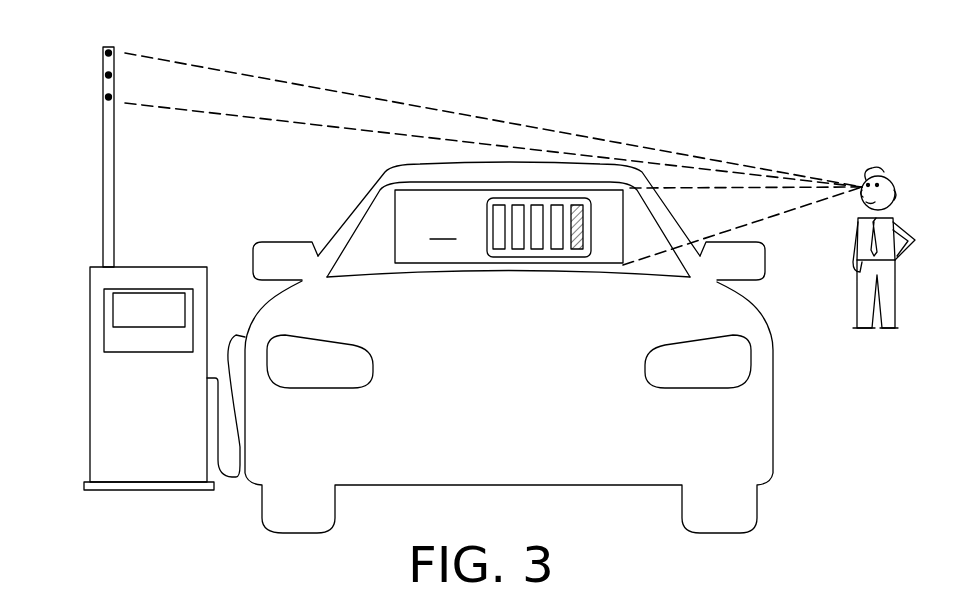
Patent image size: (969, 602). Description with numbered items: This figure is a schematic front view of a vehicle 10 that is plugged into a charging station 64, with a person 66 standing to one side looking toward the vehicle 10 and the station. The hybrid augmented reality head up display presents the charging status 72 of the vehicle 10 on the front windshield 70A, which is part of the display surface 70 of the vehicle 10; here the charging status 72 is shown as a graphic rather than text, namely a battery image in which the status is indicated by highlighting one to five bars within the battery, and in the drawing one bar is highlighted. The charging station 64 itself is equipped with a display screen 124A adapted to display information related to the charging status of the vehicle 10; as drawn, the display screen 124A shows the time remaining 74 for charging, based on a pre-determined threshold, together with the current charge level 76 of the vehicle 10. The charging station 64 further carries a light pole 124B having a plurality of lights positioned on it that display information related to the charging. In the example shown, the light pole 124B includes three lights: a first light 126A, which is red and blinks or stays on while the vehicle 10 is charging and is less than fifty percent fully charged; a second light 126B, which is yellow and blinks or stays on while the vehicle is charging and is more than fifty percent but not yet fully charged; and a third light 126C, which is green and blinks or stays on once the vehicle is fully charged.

The vehicle 10 is at (502, 347).
The charging station 64 is at (147, 375).
The user 66 is at (868, 285).
The display device 70 is at (461, 221).
The front windshield 70A is at (373, 232).
The charging status 72 is at (509, 226).
The time remaining 74 is at (120, 312).
The current charge level 76 is at (125, 335).
The display screen 124A is at (147, 289).
The light pole 124B is at (108, 140).
The first light 126A is at (104, 52).
The second light 126B is at (104, 76).
The third light 126C is at (104, 98).